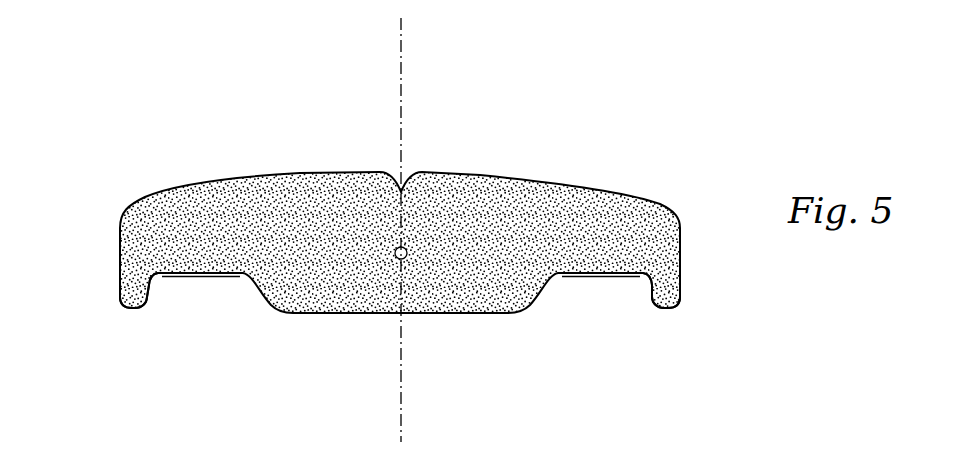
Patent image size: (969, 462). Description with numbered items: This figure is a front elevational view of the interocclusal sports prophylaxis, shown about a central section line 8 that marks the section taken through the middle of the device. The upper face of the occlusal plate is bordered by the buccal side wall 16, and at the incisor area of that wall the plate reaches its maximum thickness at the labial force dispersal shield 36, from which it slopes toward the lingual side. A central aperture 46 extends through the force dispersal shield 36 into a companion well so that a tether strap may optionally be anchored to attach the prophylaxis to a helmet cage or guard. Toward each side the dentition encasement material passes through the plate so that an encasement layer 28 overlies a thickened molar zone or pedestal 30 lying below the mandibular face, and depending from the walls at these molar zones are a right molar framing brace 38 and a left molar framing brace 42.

The section line 8- 8 is at (401, 32).
The buccal side wall 16 is at (603, 193).
The encasement layer 28 is at (180, 276).
The molar zone 30 is at (163, 280).
The labial force dispersal shield 36 is at (461, 273).
The right molar framing brace 38 is at (120, 280).
The left molar framing brace 42 is at (682, 277).
The central aperture 46 is at (395, 253).